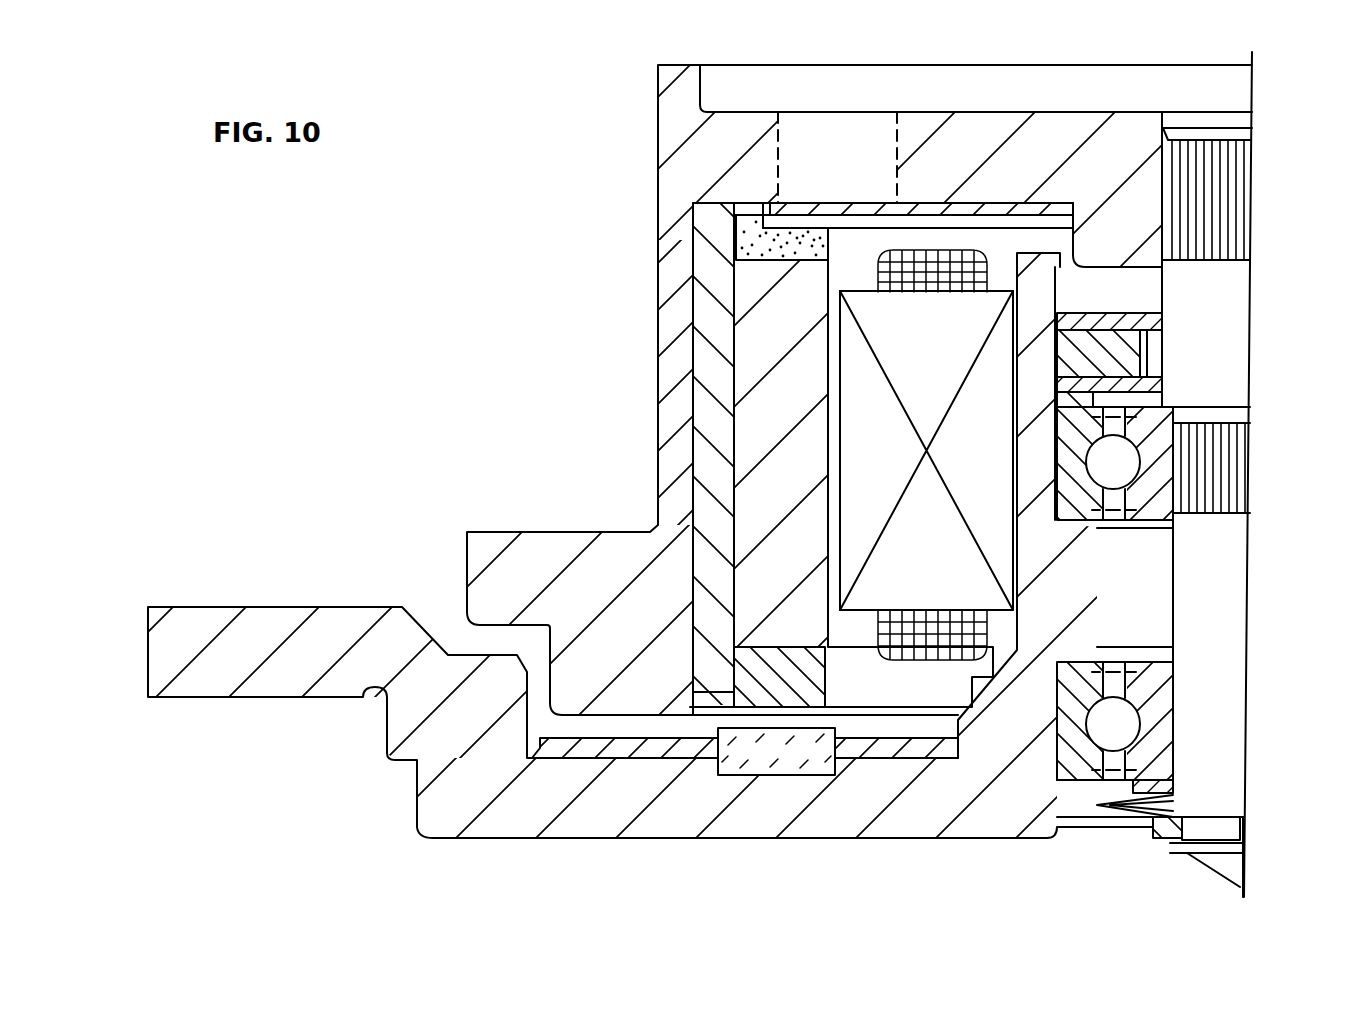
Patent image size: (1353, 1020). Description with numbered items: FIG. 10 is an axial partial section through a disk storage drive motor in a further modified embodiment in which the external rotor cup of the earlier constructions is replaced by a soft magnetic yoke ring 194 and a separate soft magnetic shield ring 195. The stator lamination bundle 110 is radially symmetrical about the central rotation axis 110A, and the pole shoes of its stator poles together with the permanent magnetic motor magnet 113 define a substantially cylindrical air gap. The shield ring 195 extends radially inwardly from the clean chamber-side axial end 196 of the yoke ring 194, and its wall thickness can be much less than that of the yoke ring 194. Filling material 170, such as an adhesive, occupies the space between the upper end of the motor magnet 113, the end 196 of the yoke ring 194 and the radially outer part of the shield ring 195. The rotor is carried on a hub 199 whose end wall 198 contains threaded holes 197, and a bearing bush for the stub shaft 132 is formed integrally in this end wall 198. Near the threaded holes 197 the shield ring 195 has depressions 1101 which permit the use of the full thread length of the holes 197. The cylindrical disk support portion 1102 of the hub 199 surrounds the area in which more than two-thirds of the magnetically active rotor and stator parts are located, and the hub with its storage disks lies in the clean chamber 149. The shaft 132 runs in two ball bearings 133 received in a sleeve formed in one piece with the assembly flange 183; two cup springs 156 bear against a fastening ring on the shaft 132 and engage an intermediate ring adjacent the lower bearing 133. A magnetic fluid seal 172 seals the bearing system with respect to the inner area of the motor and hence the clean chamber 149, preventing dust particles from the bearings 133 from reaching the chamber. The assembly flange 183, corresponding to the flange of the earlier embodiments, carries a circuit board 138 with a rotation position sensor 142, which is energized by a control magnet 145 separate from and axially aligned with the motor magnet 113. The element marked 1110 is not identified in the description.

The stator lamination bundle 110 is at (852, 465).
The central rotation axis 110A is at (1258, 185).
The motor magnet 113 is at (748, 432).
The stub shaft 132 is at (1228, 779).
The ball bearing 133 is at (1180, 520).
The circuit board 138 is at (914, 760).
The rotation position sensor 142 is at (772, 778).
The control magnet 145 is at (806, 693).
The clean chamber 149 is at (378, 396).
The cup springs 156 is at (1128, 806).
The filling material 170 is at (745, 245).
The magnetic fluid seal 172 is at (1178, 341).
The assembly flange 183 is at (258, 690).
The soft magnetic yoke ring 194 is at (706, 352).
The soft magnetic shield ring 195 is at (922, 200).
The clean chamber-side axial end of the yoke ring 196 is at (708, 215).
The threaded holes 197 is at (798, 140).
The end wall 198 is at (1038, 130).
The hub 199 is at (680, 178).
The depressions 1101 is at (852, 210).
The cylindrical disk support portion 1102 is at (648, 522).
The cover plate 1110 is at (1112, 130).